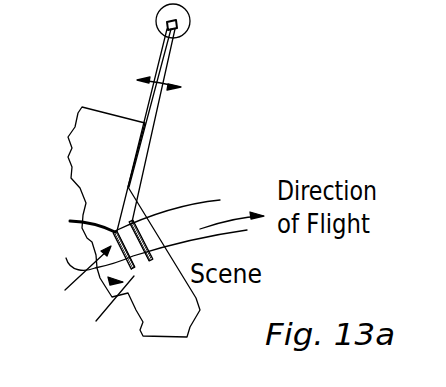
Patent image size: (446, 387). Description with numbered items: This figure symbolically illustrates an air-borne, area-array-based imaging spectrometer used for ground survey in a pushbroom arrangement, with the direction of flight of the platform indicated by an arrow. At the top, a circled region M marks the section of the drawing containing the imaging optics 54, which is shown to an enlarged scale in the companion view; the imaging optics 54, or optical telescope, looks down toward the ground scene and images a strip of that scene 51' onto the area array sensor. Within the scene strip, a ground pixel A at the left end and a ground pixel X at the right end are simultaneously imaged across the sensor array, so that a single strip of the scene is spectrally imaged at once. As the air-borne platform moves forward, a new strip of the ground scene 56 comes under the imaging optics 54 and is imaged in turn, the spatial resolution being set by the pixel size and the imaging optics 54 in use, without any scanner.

The strip of scene 51' is at (133, 218).
The imaging optics 54 is at (157, 97).
The new strip of ground scene 56 is at (152, 262).
The section of figure M is at (192, 23).
The ground pixel A is at (82, 268).
The ground pixel X is at (115, 315).